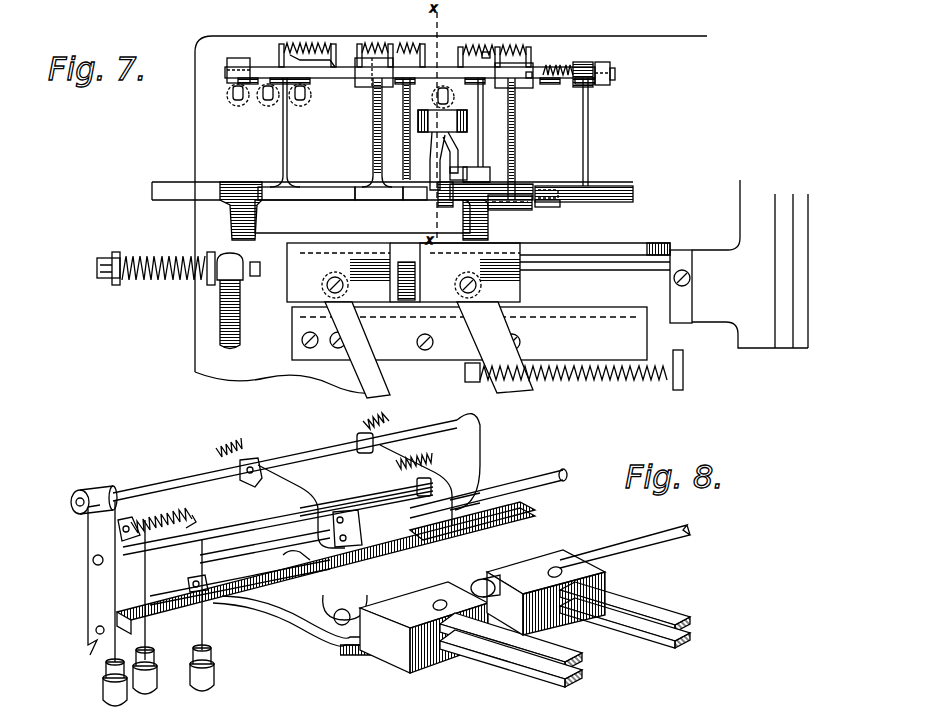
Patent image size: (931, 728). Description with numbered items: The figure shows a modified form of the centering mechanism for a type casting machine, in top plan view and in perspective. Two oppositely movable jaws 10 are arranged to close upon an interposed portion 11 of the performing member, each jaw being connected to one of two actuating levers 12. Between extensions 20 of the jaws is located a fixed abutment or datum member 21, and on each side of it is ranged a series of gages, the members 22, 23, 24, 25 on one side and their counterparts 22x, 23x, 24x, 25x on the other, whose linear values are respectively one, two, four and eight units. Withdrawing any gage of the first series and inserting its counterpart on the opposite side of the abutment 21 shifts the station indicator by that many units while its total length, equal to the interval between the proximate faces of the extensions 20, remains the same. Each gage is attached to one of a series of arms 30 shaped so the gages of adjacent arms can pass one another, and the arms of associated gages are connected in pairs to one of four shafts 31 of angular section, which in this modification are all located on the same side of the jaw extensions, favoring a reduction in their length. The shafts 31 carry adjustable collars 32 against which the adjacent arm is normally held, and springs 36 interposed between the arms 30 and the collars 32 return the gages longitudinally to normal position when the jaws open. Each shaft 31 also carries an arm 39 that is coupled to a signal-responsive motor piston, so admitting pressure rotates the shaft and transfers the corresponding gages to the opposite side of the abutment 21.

In FIG. 7, the positioning jaws 10 is at (489, 320).
In FIG. 8, the positioning jaws 10 is at (540, 565).
In FIG. 7, the interposed portion 11 is at (410, 278).
In FIG. 8, the interposed portion 11 is at (546, 592).
In FIG. 8, the actuating levers 12 is at (618, 633).
In FIG. 7, the jaw extensions 20 is at (212, 186).
In FIG. 8, the jaw extensions 20 is at (192, 598).
In FIG. 7, the fixed abutment 21 is at (446, 204).
In FIG. 8, the fixed abutment 21 is at (425, 596).
In FIG. 7, the gage 22 is at (430, 200).
In FIG. 8, the gage 22 is at (424, 627).
In FIG. 7, the gage 23 is at (408, 200).
In FIG. 8, the gage 23 is at (330, 630).
In FIG. 7, the gage 24 is at (360, 200).
In FIG. 8, the gage 24 is at (330, 600).
In FIG. 7, the gage 25 is at (290, 200).
In FIG. 8, the gage 25 is at (286, 532).
In FIG. 7, the gage 22x is at (478, 166).
In FIG. 8, the gage 22x is at (420, 482).
In FIG. 7, the gage 23x is at (482, 176).
In FIG. 8, the gage 23x is at (468, 472).
In FIG. 7, the gage 24x is at (520, 208).
In FIG. 8, the gage 24x is at (515, 498).
In FIG. 7, the gage 25x is at (614, 180).
In FIG. 8, the gage 25x is at (552, 468).
In FIG. 7, the arms 30 is at (287, 142).
In FIG. 7, the shafts 31 is at (345, 78).
In FIG. 8, the shafts 31 is at (336, 498).
In FIG. 7, the adjustable collars 32 is at (372, 87).
In FIG. 8, the adjustable collars 32 is at (236, 490).
In FIG. 7, the springs 36 is at (300, 46).
In FIG. 8, the springs 36 is at (236, 446).
In FIG. 7, the arm 39 is at (236, 102).
In FIG. 8, the arm 39 is at (118, 496).